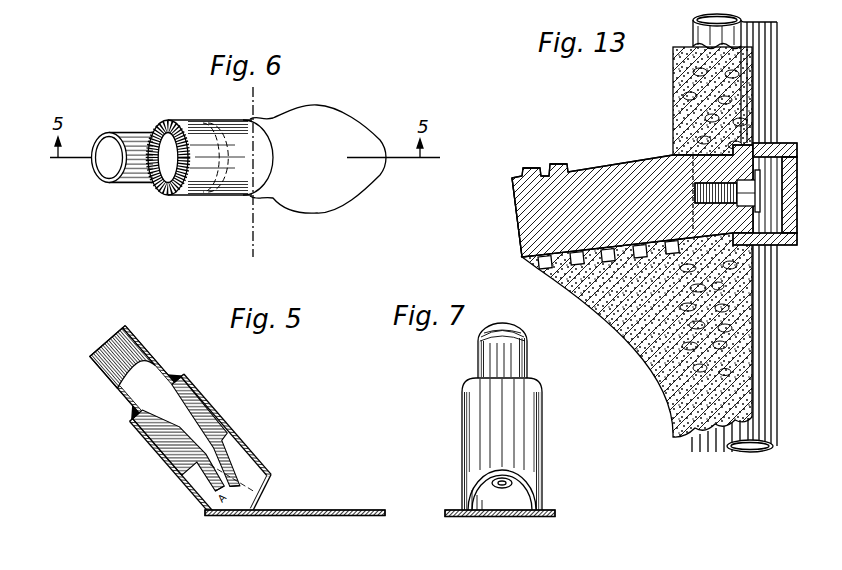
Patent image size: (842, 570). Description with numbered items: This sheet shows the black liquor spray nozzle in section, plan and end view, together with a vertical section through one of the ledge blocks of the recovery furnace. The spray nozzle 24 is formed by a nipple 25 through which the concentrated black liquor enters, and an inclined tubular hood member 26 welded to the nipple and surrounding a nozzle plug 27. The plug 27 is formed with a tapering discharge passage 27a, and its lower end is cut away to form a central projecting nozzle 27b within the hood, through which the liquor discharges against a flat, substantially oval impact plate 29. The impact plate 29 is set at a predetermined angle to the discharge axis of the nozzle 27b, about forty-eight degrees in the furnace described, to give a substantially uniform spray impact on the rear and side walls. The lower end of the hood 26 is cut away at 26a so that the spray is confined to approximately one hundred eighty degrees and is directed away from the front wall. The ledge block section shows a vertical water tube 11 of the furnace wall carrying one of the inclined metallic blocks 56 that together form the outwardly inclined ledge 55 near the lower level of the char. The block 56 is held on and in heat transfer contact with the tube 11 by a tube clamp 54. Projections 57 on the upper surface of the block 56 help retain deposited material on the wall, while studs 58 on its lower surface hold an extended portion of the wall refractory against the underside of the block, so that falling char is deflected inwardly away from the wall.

In FIG. 13, the water tubes 11 is at (768, 357).
In FIG. 6, the spray nozzle 24 is at (198, 118).
In FIG. 5, the spray nozzle 24 is at (201, 448).
In FIG. 7, the spray nozzle 24 is at (543, 447).
In FIG. 6, the nipple 25 is at (127, 184).
In FIG. 5, the nipple 25 is at (144, 360).
In FIG. 7, the nipple 25 is at (478, 359).
In FIG. 6, the inclined tubular hood member 26 is at (204, 197).
In FIG. 5, the inclined tubular hood member 26 is at (226, 425).
In FIG. 7, the inclined tubular hood member 26 is at (470, 421).
In FIG. 5, the cut away lower end of hood 26a is at (260, 492).
In FIG. 5, the nozzle plug 27 is at (207, 434).
In FIG. 5, the tapering discharge passage 27a is at (181, 450).
In FIG. 5, the central projecting nozzle 27b is at (227, 482).
In FIG. 7, the central projecting nozzle 27b is at (507, 491).
In FIG. 6, the impact plate 29 is at (350, 205).
In FIG. 5, the impact plate 29 is at (347, 510).
In FIG. 7, the impact plate 29 is at (525, 518).
In FIG. 13, the tube clamps 54 is at (790, 191).
In FIG. 13, the ledge 55 is at (520, 245).
In FIG. 13, the inclined metallic blocks 56 is at (516, 220).
In FIG. 13, the projections 57 is at (532, 166).
In FIG. 13, the studs 58 is at (547, 272).